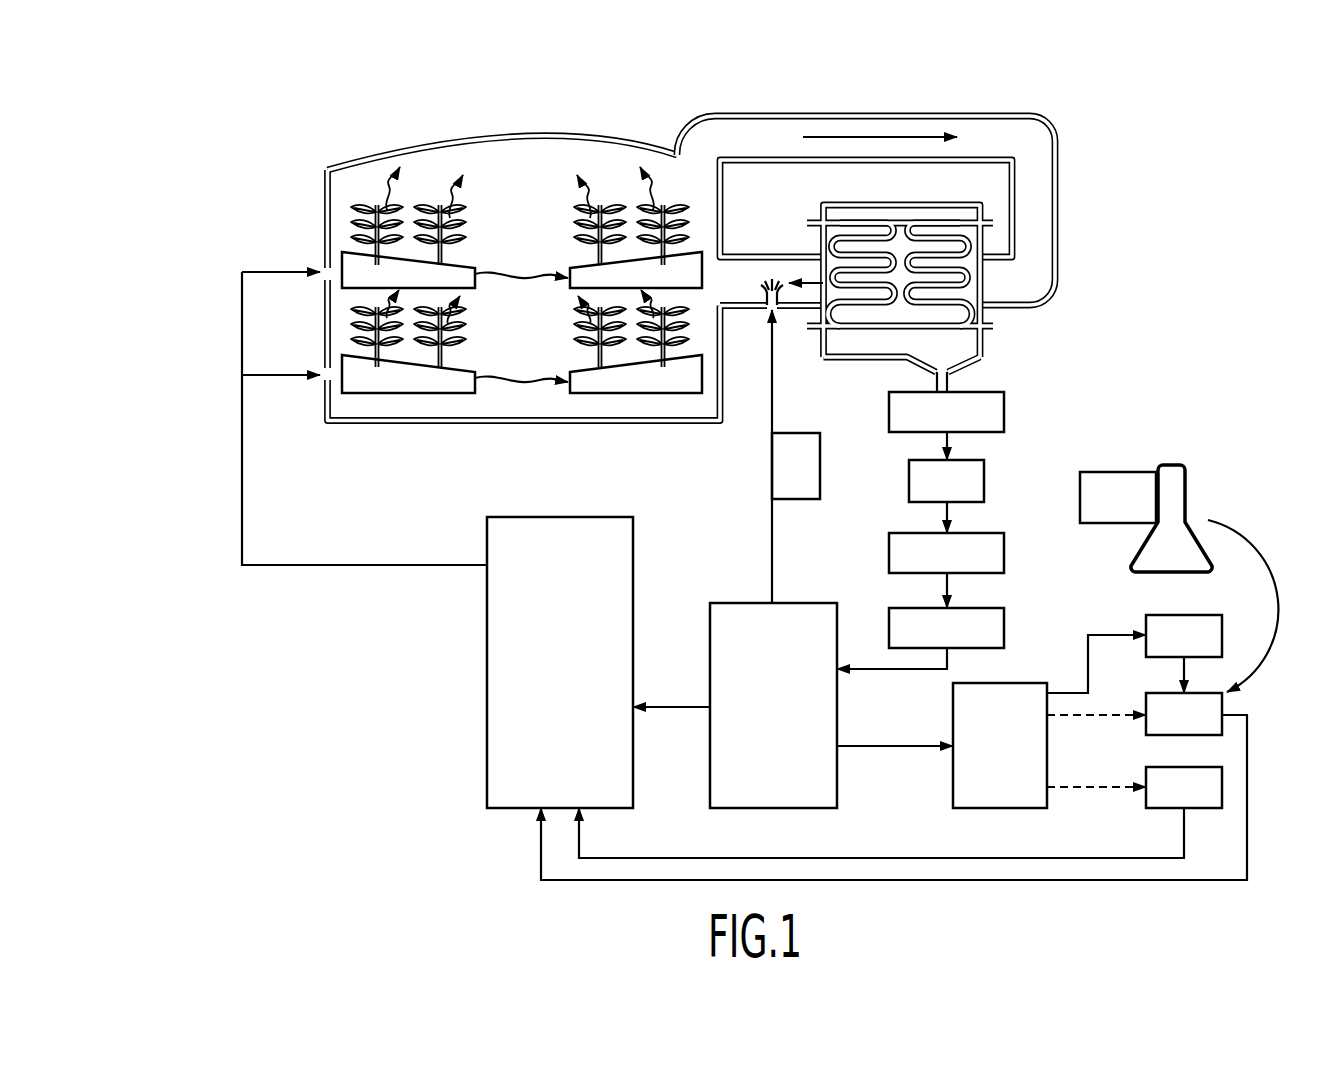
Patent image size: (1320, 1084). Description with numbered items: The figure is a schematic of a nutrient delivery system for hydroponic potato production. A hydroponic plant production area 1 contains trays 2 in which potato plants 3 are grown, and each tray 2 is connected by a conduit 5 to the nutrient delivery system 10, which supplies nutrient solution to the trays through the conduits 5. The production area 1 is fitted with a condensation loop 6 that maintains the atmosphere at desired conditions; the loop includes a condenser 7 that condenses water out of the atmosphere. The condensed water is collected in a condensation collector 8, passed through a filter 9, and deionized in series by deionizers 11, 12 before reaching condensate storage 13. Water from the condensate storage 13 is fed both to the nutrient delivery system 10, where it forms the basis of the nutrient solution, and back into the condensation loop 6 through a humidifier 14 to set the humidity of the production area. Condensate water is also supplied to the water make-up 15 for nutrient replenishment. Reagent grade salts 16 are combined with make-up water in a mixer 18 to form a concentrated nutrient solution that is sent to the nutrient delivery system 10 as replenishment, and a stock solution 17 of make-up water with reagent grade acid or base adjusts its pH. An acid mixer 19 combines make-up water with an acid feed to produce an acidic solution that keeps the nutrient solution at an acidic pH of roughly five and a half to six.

The hydroponic plant production area 1 is at (528, 132).
The trays 2 is at (577, 284).
The potato plants 3 is at (378, 206).
The conduit 5 is at (517, 273).
The condensation loop 6 is at (1030, 133).
The condenser 7 is at (970, 288).
The condensation collector 8 is at (995, 413).
The filter 9 is at (977, 482).
The nutrient delivery system 10 is at (547, 671).
The deionizer 11 is at (993, 553).
The deionizer 12 is at (993, 627).
The condensate storage 13 is at (757, 721).
The humidifier 14 is at (784, 480).
The water make-up 15 is at (987, 761).
The reagent grade salts 16 is at (1113, 478).
The stock solution 17 is at (1171, 652).
The mixer 18 is at (1171, 730).
The acid mixer 19 is at (1171, 804).